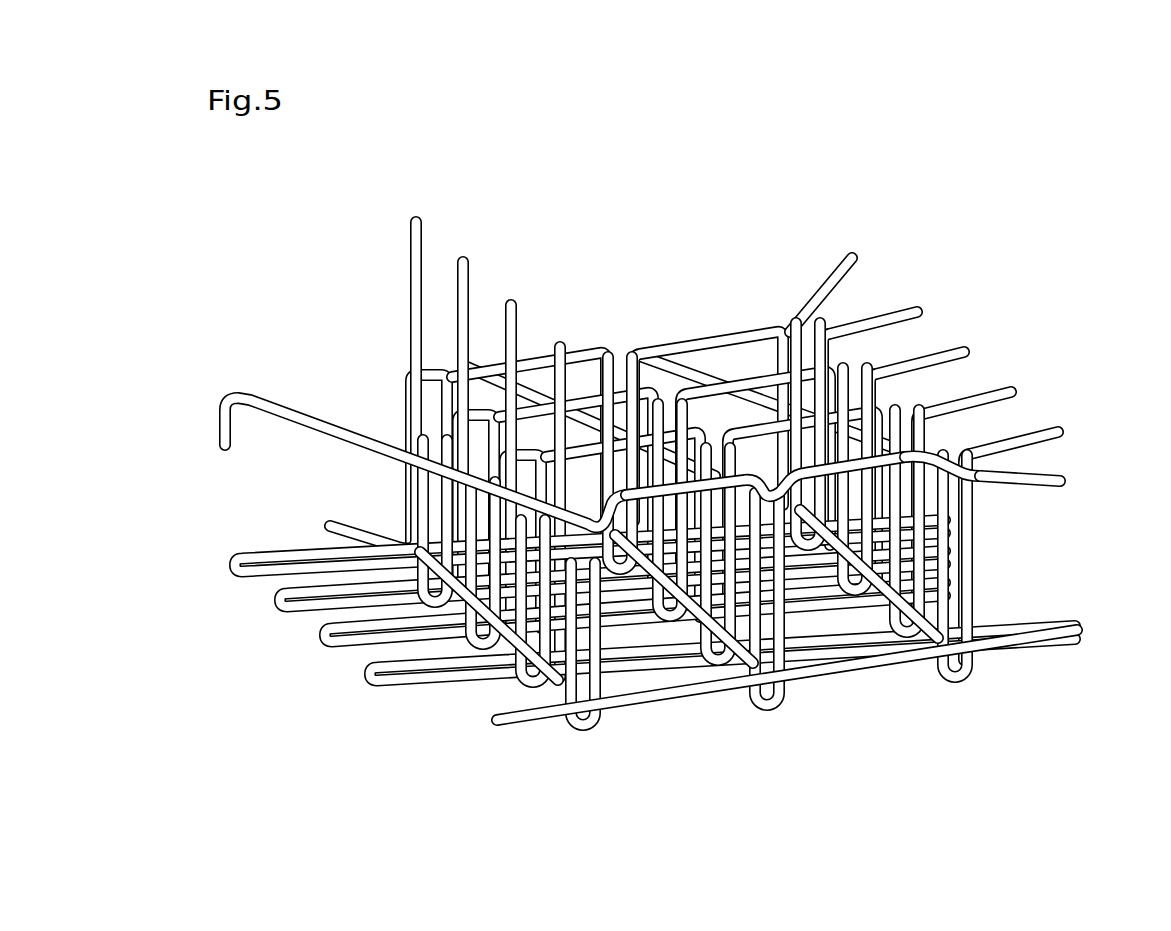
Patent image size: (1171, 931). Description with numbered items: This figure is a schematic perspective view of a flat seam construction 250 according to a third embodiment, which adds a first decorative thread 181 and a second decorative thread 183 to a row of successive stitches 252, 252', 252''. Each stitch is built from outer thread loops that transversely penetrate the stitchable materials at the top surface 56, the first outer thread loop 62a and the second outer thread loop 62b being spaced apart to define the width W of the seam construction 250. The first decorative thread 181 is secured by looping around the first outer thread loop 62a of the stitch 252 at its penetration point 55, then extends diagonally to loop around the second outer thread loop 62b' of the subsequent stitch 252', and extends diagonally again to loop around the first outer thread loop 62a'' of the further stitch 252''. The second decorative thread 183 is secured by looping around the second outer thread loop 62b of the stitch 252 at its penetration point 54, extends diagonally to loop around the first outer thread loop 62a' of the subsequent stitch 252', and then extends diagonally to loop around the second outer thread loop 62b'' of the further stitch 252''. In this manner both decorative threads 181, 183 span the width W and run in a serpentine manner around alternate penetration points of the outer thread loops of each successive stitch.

The flat seam construction 250 is at (1000, 140).
The stitch 252 is at (755, 350).
The subsequent stitch 252' is at (599, 370).
The further stitch 252'' is at (454, 387).
The second decorative thread 183 is at (833, 265).
The penetration point 54 is at (802, 340).
The penetration point 55 is at (948, 460).
The top surface 56 is at (388, 373).
The first outer thread loop 62a is at (1052, 522).
The first outer thread loop 62a' is at (771, 620).
The first outer thread loop 62a'' is at (485, 604).
The second outer thread loop 62b is at (906, 385).
The second outer thread loop 62b' is at (569, 389).
The second outer thread loop 62b'' is at (361, 417).
The first decorative thread 181 is at (1045, 484).
The width W is at (332, 713).